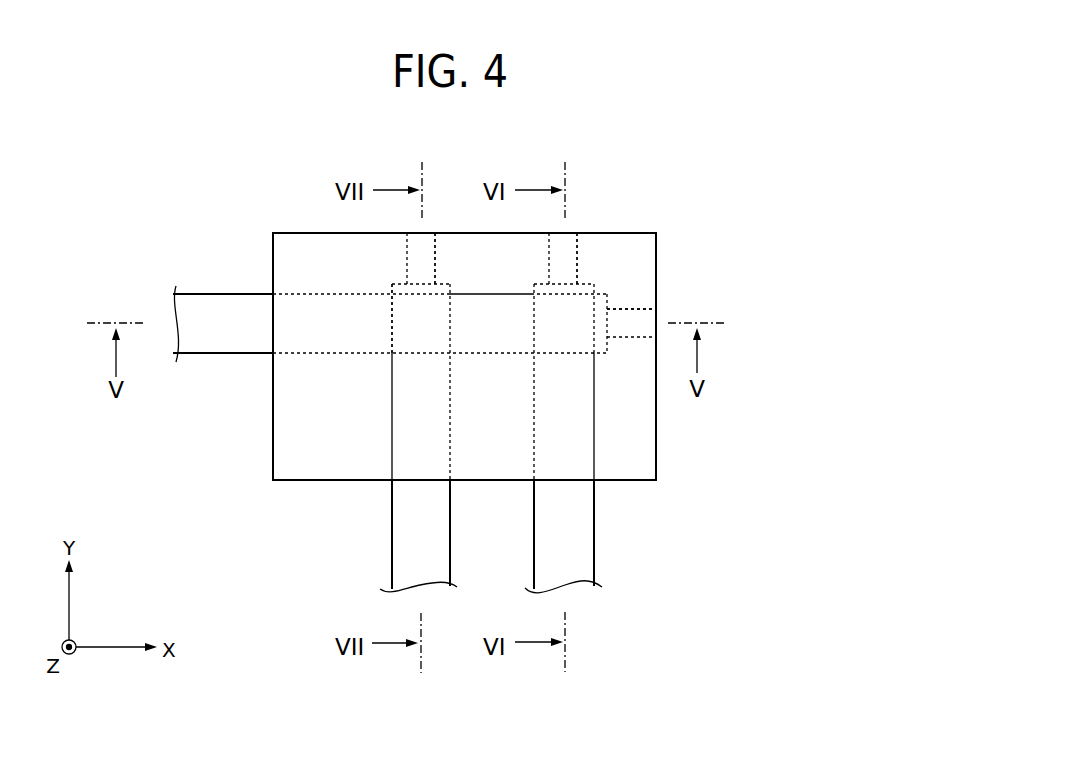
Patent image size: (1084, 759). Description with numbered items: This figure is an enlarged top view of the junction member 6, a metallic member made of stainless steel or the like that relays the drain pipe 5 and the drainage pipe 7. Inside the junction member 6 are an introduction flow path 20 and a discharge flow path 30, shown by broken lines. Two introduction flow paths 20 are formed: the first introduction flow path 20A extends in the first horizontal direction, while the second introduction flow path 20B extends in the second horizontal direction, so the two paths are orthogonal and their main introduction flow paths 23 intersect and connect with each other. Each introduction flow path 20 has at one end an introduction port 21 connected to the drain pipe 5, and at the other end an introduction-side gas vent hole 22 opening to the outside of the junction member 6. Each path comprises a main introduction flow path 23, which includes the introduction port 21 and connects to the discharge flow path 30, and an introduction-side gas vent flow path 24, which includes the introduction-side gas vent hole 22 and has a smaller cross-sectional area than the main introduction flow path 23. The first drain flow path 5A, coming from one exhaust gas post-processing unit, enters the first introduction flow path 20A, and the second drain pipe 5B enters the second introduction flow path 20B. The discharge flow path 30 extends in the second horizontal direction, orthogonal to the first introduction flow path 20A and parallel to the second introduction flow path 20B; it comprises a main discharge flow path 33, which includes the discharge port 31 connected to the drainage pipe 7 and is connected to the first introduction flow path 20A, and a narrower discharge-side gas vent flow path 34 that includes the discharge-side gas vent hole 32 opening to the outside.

The drain pipe 5 is at (447, 371).
The first drain flow path 5A is at (201, 306).
The second drain pipe 5B is at (572, 558).
The junction member 6 is at (660, 230).
The drainage pipe 7 is at (405, 568).
The introduction flow path 20 is at (544, 300).
The first introduction flow path 20A is at (320, 283).
The second introduction flow path 20B is at (606, 450).
The introduction port 21 is at (272, 317).
The introduction-side gas vent hole 22 is at (570, 233).
The main introduction flow path 23 is at (492, 293).
The introduction-side gas vent flow path 24 is at (580, 260).
The discharge flow path 30 is at (380, 445).
The discharge port 31 is at (417, 482).
The discharge-side gas vent hole 32 is at (426, 233).
The main discharge flow path 33 is at (391, 395).
The discharge-side gas vent flow path 34 is at (435, 258).